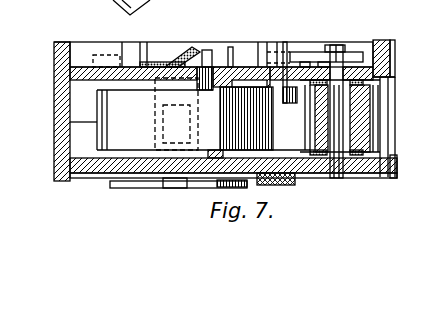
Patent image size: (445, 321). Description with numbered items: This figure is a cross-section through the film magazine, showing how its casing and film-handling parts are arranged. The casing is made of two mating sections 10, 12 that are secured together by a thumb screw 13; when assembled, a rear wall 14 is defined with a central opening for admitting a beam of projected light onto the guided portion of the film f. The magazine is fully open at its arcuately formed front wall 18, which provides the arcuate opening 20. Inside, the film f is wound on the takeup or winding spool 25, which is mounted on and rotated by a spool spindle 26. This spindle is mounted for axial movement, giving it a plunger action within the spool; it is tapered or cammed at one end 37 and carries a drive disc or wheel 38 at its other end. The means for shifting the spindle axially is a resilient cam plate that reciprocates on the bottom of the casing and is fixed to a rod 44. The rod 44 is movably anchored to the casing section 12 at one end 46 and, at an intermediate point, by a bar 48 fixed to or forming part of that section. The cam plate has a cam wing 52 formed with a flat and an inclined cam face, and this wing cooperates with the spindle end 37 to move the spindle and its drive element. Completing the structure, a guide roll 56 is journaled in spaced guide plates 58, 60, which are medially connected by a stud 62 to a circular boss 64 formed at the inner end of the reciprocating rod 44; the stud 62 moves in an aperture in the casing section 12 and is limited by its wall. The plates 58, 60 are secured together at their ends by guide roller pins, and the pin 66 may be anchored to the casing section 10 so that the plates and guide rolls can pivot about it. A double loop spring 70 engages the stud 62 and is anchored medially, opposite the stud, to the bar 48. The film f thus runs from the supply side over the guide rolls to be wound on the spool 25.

The casing section 10 is at (54, 153).
The casing section 12 is at (54, 53).
The rear wall 14 is at (54, 101).
The front wall 18 is at (392, 47).
The arcuate opening 20 is at (392, 107).
The takeup or winding spool 25 is at (112, 140).
The spool spindle 26 is at (178, 152).
The tapered or cammed spindle end 37 is at (206, 55).
The drive disc or wheel 38 is at (138, 188).
The rod 44 is at (237, 57).
The rod end 46 is at (116, 46).
The bar 48 is at (287, 53).
The cam wing 52 is at (161, 63).
The guide roll 56 is at (372, 136).
The guide plate 58 is at (370, 62).
The guide plate 60 is at (357, 154).
The stud 62 is at (342, 50).
The circular boss 64 is at (310, 53).
The guide roller pin 66 is at (345, 125).
The double loop spring 70 is at (324, 62).
The thumb screw 13 is at (292, 182).
The film f is at (380, 140).